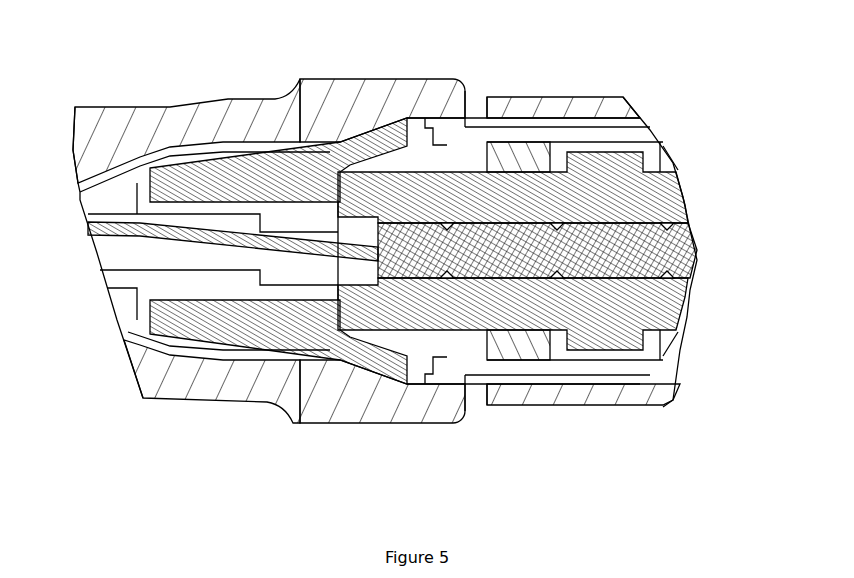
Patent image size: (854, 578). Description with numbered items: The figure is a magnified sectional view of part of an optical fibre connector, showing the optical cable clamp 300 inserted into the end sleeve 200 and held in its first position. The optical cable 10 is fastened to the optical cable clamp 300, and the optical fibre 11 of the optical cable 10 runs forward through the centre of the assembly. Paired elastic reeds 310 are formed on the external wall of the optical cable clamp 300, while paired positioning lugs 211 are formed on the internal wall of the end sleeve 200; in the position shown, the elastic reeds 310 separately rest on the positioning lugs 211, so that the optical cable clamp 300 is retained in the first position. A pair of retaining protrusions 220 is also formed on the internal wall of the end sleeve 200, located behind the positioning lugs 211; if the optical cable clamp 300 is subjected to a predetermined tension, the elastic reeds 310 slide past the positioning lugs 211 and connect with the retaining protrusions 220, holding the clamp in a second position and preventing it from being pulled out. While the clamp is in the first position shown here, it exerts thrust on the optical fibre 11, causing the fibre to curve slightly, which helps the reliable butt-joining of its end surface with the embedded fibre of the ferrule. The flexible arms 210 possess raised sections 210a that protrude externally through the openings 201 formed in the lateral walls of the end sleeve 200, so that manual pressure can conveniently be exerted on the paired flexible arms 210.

The optical cable 10 is at (658, 253).
The optical fibre 11 is at (220, 234).
The end sleeve 200 is at (137, 123).
The openings 201 is at (447, 140).
The flexible arms 210 is at (270, 117).
The raised sections 210a is at (368, 97).
The positioning lugs 211 is at (418, 375).
The retaining protrusions 220 is at (435, 148).
The optical cable clamp 300 is at (605, 318).
The elastic reeds 310 is at (350, 135).